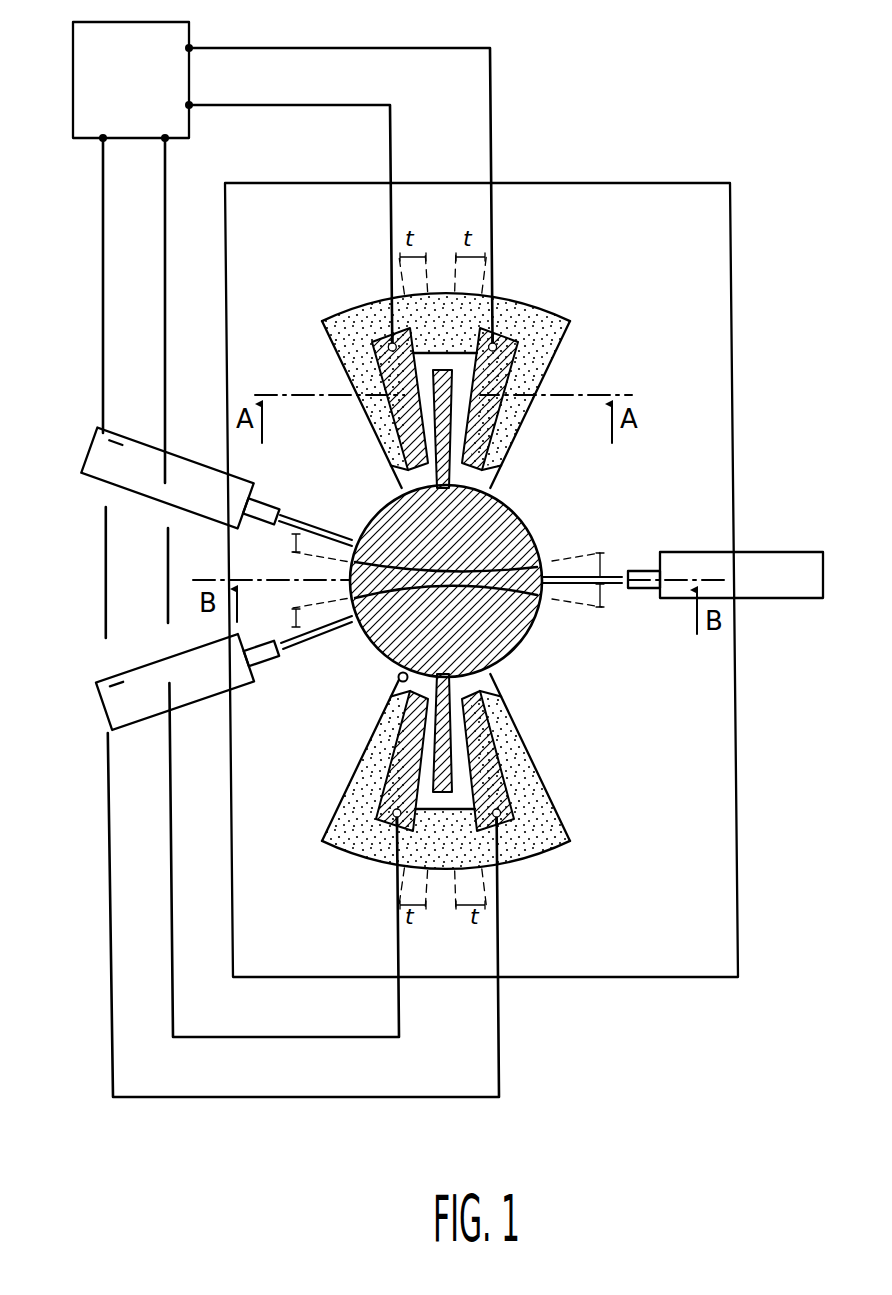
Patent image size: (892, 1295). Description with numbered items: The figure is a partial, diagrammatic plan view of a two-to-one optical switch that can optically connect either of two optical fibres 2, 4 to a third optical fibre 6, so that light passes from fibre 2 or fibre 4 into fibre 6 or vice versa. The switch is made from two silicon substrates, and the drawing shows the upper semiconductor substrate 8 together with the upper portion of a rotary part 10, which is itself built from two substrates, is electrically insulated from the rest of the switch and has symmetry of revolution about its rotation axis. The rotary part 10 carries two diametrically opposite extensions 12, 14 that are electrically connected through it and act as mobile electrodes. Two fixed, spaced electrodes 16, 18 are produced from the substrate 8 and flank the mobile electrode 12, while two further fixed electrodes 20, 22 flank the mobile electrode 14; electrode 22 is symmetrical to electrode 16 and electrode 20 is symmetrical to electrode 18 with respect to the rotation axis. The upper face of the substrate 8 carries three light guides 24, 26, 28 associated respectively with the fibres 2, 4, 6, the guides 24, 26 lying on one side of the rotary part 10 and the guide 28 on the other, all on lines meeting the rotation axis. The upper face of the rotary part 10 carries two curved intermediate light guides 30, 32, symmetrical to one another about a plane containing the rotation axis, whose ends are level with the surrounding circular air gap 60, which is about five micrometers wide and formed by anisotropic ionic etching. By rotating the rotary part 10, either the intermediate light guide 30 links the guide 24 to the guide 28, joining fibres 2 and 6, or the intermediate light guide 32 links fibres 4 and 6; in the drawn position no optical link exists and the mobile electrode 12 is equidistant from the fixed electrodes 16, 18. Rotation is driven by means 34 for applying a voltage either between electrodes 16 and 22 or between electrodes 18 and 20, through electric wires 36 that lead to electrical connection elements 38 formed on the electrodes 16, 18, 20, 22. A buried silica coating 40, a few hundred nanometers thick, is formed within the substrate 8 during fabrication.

The optical fibre 2 is at (90, 452).
The optical fibre 4 is at (106, 718).
The optical fibre 6 is at (801, 572).
The semiconductor substrate 8 is at (718, 762).
The rotary part 10 is at (493, 525).
The extension 12 is at (441, 406).
The extension 14 is at (448, 736).
The fixed electrode 16 is at (397, 378).
The fixed electrode 18 is at (487, 378).
The electrode 20 is at (400, 765).
The electrode 22 is at (480, 784).
The light guide 24 is at (343, 540).
The light guide 26 is at (320, 637).
The light guide 28 is at (567, 584).
The intermediate light guide 30 is at (396, 566).
The intermediate light guide 32 is at (392, 593).
The means for applying a voltage 34 is at (150, 98).
The electric wires 36 is at (167, 180).
The electrical connection elements 38 is at (362, 352).
The silica coating 40 is at (542, 320).
The air gap 60 is at (399, 680).